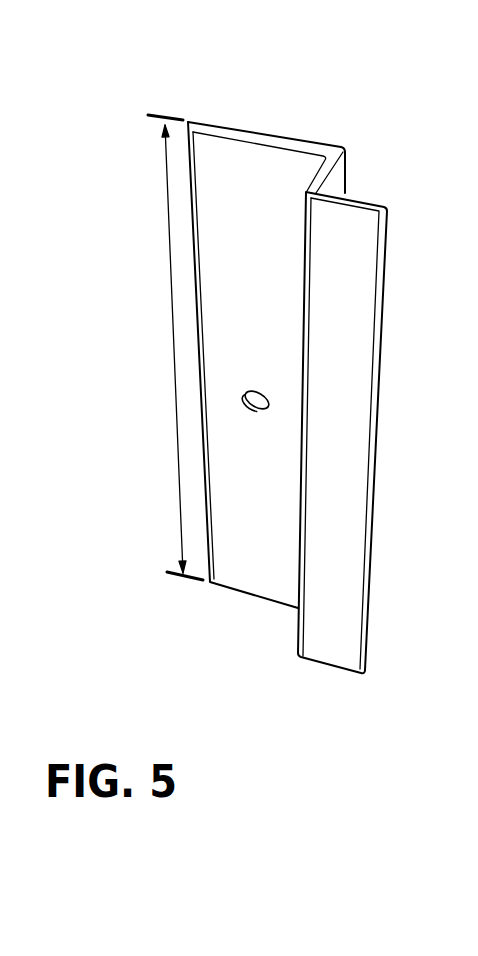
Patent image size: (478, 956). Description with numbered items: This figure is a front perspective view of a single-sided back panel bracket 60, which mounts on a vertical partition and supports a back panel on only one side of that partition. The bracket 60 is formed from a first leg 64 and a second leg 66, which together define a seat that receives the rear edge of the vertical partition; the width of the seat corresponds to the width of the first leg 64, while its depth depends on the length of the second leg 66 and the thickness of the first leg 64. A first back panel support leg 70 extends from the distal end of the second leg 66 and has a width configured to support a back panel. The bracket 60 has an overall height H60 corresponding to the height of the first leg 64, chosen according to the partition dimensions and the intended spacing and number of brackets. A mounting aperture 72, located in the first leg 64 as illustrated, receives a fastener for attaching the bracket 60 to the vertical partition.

The bracket 60 is at (316, 350).
The first leg 64 is at (277, 182).
The second leg 66 is at (335, 182).
The first back panel support leg 70 is at (337, 482).
The aperture 72 is at (250, 410).
The overall height H60 is at (166, 193).